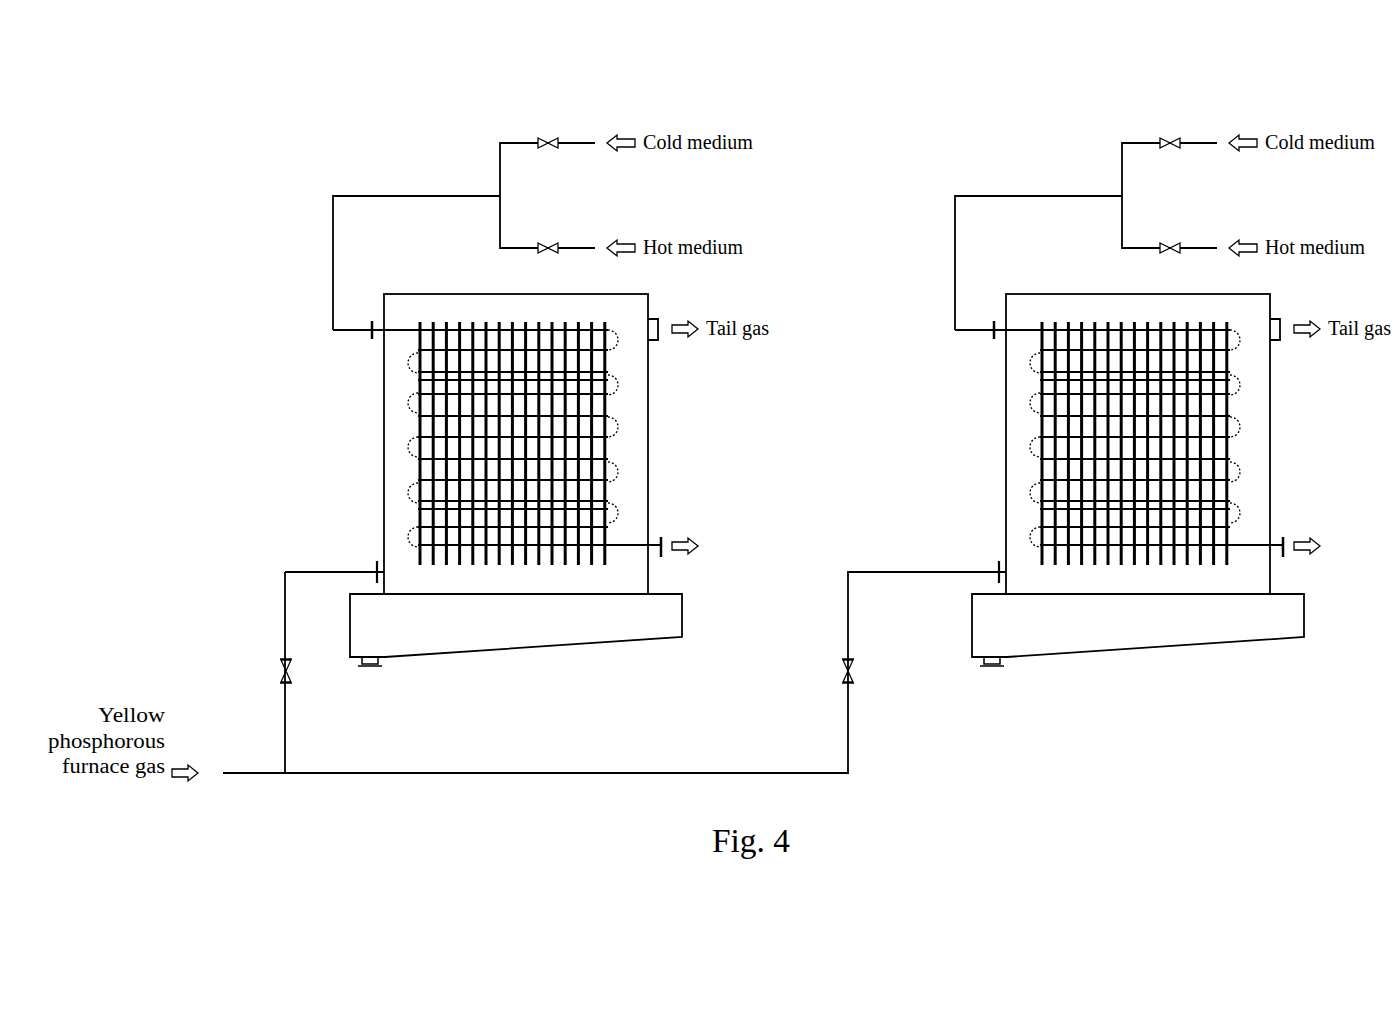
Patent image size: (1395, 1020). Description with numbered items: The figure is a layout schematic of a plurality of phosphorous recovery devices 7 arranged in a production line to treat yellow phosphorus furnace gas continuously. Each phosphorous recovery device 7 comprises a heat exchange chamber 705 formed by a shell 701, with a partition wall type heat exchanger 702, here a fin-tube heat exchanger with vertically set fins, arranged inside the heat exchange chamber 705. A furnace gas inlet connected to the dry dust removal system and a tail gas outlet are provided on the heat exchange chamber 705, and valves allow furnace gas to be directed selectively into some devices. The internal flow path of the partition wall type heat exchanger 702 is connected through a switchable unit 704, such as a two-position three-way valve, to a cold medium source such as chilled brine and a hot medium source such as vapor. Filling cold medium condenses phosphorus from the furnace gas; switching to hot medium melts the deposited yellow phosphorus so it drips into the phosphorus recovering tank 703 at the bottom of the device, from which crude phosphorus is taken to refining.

The phosphorous recovery device 7 is at (545, 480).
The shell 701 is at (648, 470).
The partition wall type heat exchanger 702 is at (412, 440).
The phosphorus recovering tank 703 is at (682, 613).
The switchable unit 704 is at (470, 162).
The heat exchange chamber 705 is at (398, 512).